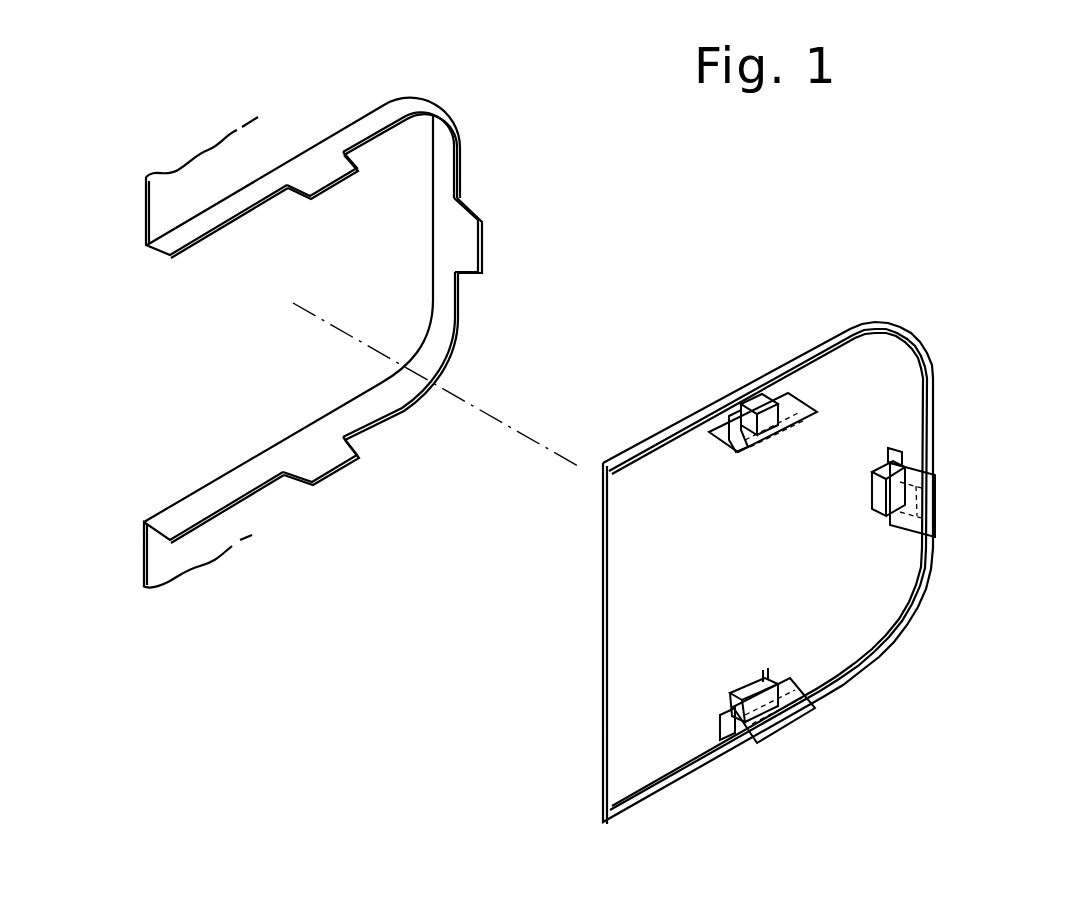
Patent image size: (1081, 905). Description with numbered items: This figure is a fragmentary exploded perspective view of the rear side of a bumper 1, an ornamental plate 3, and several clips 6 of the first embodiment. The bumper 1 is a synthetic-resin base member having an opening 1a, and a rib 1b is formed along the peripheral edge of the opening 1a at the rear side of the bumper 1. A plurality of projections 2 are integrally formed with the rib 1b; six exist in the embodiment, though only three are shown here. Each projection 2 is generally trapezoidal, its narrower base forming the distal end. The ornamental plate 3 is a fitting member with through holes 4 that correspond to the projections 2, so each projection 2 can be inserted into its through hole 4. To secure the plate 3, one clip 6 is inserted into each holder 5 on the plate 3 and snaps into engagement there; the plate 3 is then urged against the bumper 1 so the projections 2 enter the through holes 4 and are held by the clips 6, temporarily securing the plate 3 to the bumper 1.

The bumper 1 is at (360, 343).
The opening 1a is at (255, 462).
The rib 1b is at (212, 229).
The projection 2 is at (333, 188).
The ornamental plate 3 is at (979, 421).
The through hole 4 is at (731, 415).
The holder 5 is at (757, 403).
The clip 6 is at (810, 428).